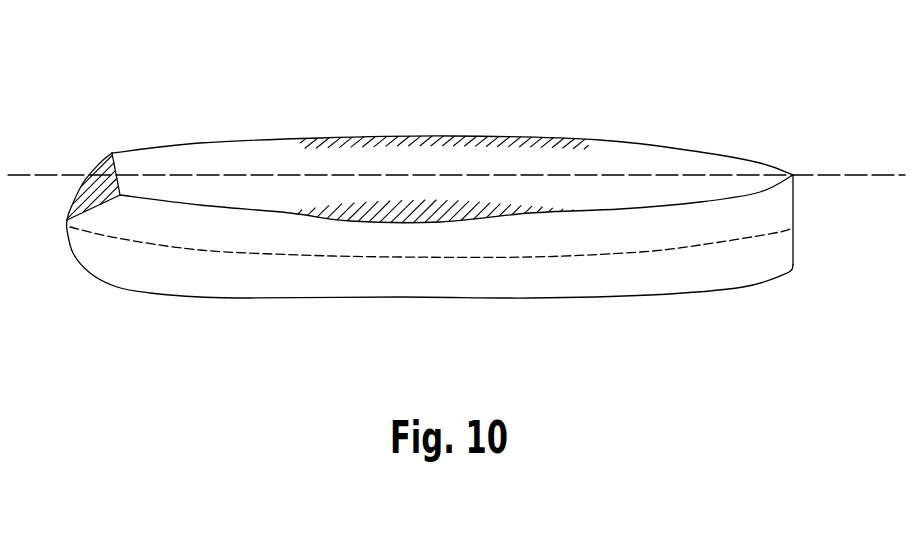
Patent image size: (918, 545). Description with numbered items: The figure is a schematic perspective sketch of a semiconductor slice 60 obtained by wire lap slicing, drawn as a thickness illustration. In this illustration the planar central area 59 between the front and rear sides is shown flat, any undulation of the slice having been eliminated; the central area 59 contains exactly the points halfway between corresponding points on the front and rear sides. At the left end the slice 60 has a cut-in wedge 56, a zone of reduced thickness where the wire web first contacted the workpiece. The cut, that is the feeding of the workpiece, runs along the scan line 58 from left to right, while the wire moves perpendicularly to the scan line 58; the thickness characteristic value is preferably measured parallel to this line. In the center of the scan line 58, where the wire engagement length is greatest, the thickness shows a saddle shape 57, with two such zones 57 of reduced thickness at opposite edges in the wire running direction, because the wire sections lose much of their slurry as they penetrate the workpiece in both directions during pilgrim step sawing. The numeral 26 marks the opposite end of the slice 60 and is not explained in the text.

The trailing edge 26 is at (793, 175).
The cut-in wedge 56 is at (115, 153).
The saddle shape 57 is at (374, 140).
The scan line 58 is at (437, 173).
The central area 59 is at (243, 255).
The semiconductor slice 60 is at (238, 131).